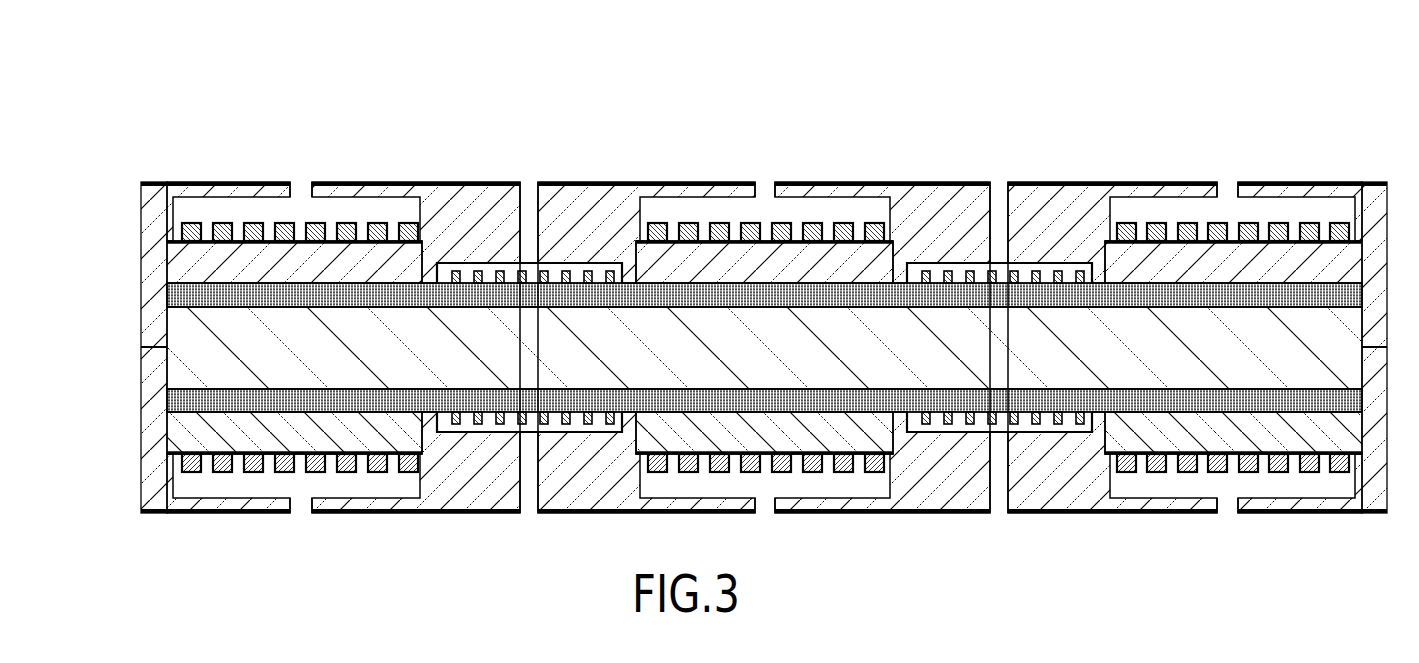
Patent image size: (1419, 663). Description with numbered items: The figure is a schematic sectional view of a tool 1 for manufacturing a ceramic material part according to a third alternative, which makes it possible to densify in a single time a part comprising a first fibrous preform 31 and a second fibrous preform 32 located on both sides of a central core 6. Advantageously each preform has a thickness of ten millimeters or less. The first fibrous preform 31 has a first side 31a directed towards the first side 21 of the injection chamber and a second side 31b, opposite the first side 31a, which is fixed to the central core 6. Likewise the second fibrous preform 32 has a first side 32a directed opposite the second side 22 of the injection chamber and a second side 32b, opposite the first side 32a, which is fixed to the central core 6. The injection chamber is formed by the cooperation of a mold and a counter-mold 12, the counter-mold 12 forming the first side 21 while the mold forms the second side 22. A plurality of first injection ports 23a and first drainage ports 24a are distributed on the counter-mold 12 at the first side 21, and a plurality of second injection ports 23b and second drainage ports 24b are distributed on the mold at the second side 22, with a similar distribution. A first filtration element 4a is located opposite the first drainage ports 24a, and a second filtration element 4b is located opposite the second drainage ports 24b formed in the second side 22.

The tool 1 is at (198, 110).
The counter-mold 12 is at (149, 213).
The central core 6 is at (1335, 340).
The first fibrous preform 31 is at (724, 229).
The first side of the first fibrous preform 31a is at (197, 281).
The second side of the first fibrous preform 31b is at (195, 292).
The second fibrous preform 32 is at (724, 468).
The first side of the second fibrous preform 32a is at (197, 420).
The second side of the second fibrous preform 32b is at (195, 403).
The first side of the injection chamber 21 is at (437, 268).
The second side of the injection chamber 22 is at (437, 428).
The first filtration element 4a is at (238, 240).
The second filtration element 4b is at (238, 458).
The first drainage ports 24a is at (297, 178).
The second drainage ports 24b is at (297, 518).
The first injection ports 23a is at (528, 178).
The second injection ports 23b is at (528, 518).